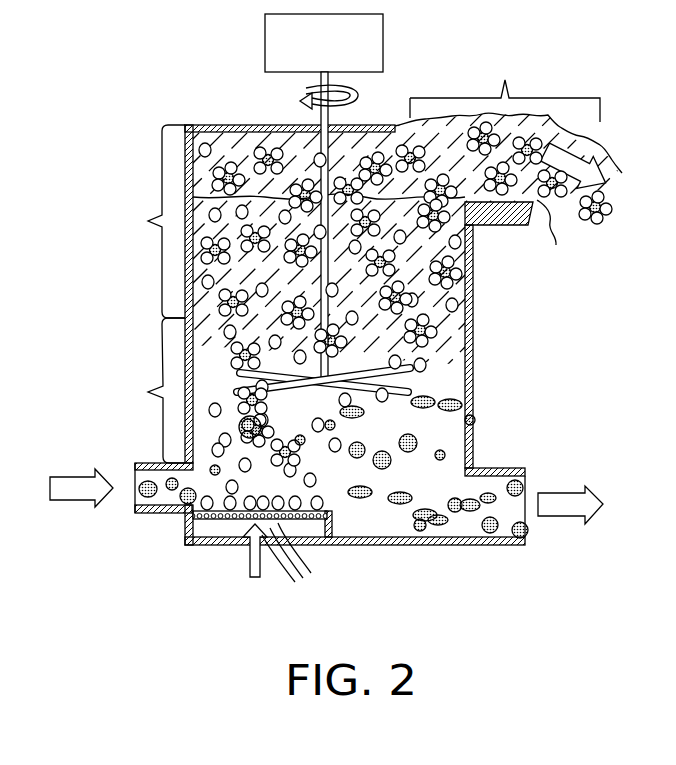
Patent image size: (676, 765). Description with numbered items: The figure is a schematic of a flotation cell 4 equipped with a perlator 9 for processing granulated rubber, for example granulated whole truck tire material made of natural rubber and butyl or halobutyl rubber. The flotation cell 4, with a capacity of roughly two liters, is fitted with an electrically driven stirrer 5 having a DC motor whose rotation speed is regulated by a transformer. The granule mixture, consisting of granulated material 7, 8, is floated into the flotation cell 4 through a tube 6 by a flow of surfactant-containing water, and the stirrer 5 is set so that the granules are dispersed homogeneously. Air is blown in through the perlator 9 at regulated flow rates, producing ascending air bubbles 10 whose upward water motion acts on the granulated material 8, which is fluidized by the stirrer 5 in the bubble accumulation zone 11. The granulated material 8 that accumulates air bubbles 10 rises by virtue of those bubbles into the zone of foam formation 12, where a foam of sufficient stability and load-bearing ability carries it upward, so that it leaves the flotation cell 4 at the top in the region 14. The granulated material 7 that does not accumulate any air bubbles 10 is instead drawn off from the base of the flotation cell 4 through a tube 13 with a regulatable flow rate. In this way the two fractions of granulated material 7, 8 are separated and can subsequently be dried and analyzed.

The flotation cell 4 is at (196, 122).
The stirrer 5 is at (280, 45).
The tube 6 is at (88, 483).
The granulated material 7 is at (458, 508).
The granulated material 8 is at (398, 298).
The perlator 9 is at (283, 561).
The air bubbles 10 is at (192, 513).
The bubble accumulation zone 11 is at (151, 390).
The zone of foam formation 12 is at (151, 221).
The tube 13 is at (563, 490).
The region 14 is at (561, 130).